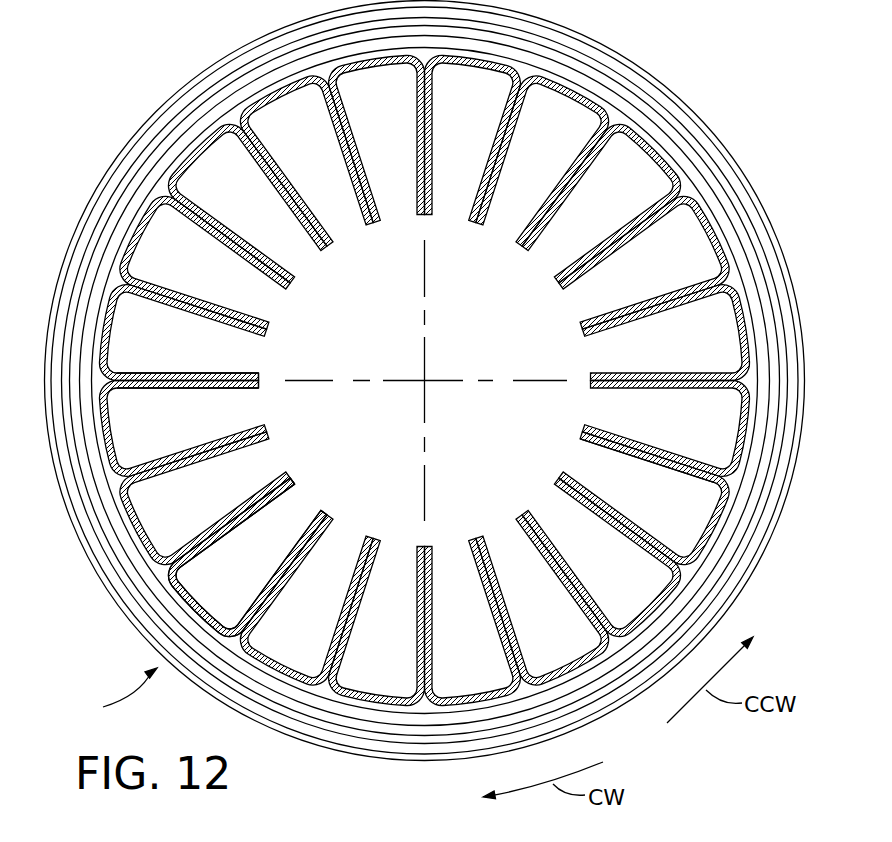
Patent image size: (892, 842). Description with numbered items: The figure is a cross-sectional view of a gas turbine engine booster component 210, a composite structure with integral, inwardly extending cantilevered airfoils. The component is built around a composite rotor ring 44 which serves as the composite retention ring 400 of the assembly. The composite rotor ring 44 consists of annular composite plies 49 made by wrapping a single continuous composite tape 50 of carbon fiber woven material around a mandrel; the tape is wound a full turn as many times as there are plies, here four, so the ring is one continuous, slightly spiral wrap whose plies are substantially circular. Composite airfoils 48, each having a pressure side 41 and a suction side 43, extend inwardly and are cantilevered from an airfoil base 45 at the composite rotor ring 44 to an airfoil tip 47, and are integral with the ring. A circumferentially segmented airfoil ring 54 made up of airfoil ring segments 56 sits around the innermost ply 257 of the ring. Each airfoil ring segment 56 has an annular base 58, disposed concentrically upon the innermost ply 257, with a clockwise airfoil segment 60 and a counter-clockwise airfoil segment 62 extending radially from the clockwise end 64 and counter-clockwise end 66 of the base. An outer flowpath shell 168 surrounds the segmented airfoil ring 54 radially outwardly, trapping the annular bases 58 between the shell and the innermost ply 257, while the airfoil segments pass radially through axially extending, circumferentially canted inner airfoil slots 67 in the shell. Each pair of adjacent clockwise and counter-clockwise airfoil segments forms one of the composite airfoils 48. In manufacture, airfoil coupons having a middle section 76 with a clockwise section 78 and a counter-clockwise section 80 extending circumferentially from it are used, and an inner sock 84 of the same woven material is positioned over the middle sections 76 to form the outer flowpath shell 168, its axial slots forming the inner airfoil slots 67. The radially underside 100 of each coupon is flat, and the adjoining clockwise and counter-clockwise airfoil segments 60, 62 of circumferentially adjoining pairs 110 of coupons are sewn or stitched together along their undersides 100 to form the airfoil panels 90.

The pressure side 41 is at (163, 389).
The suction side 43 is at (200, 372).
The composite rotor ring 44 is at (424, 381).
The airfoil base 45 is at (128, 372).
The airfoil tip 47 is at (258, 372).
The composite airfoils 48 is at (222, 389).
The annular composite plies 49 is at (592, 42).
The composite tape 50 is at (663, 97).
The circumferentially segmented airfoil ring 54 is at (702, 203).
The airfoil ring segments 56 is at (713, 228).
The annular base 58 is at (713, 531).
The clockwise airfoil segment 60 is at (633, 526).
The counter-clockwise airfoil segment 62 is at (674, 480).
The clockwise end 64 is at (707, 584).
The counter-clockwise end 66 is at (733, 473).
The inner airfoil slots 67 is at (640, 661).
The middle section 76 is at (197, 608).
The clockwise section 78 is at (202, 553).
The counter-clockwise section 80 is at (298, 523).
The inner sock 84 is at (567, 121).
The airfoil panels 90 is at (287, 211).
The radially underside 100 is at (305, 578).
The circumferentially adjoining pairs of airfoil coupons 110 is at (293, 484).
The outer flowpath shell 168 is at (563, 651).
The gas turbine engine booster component 210 is at (105, 696).
The innermost ply 257 is at (752, 381).
The composite retention ring 400 is at (424, 387).